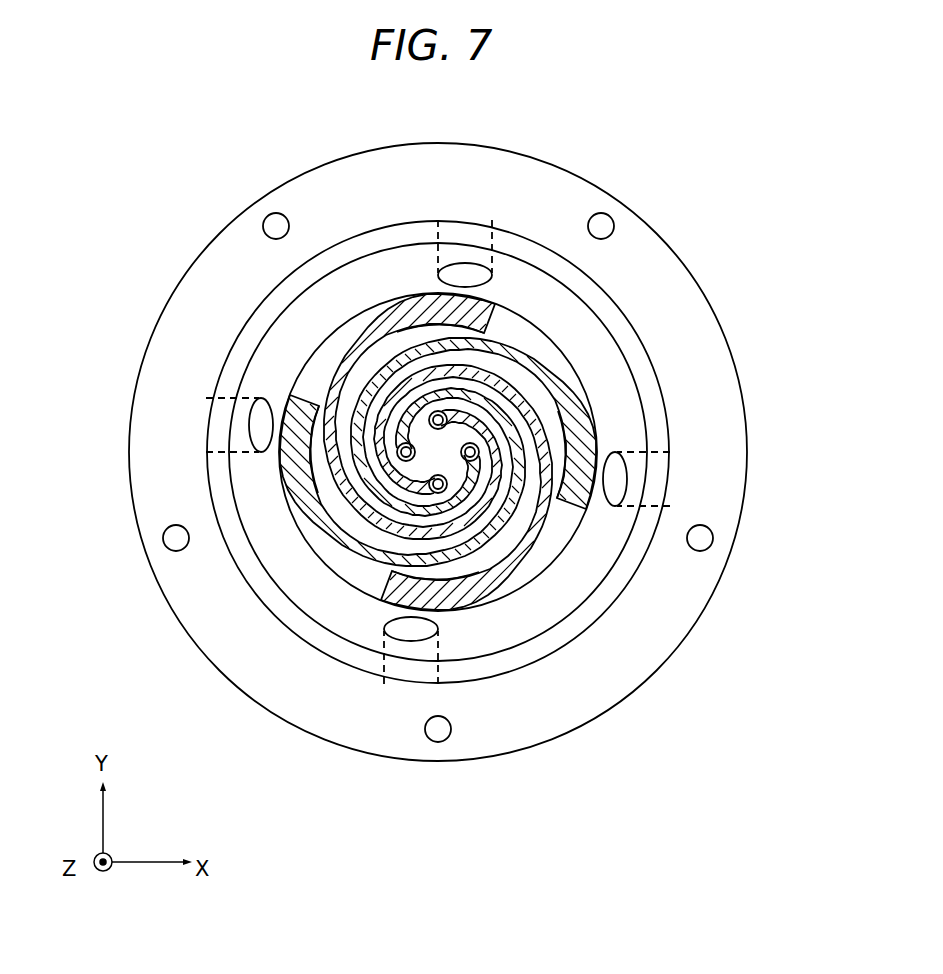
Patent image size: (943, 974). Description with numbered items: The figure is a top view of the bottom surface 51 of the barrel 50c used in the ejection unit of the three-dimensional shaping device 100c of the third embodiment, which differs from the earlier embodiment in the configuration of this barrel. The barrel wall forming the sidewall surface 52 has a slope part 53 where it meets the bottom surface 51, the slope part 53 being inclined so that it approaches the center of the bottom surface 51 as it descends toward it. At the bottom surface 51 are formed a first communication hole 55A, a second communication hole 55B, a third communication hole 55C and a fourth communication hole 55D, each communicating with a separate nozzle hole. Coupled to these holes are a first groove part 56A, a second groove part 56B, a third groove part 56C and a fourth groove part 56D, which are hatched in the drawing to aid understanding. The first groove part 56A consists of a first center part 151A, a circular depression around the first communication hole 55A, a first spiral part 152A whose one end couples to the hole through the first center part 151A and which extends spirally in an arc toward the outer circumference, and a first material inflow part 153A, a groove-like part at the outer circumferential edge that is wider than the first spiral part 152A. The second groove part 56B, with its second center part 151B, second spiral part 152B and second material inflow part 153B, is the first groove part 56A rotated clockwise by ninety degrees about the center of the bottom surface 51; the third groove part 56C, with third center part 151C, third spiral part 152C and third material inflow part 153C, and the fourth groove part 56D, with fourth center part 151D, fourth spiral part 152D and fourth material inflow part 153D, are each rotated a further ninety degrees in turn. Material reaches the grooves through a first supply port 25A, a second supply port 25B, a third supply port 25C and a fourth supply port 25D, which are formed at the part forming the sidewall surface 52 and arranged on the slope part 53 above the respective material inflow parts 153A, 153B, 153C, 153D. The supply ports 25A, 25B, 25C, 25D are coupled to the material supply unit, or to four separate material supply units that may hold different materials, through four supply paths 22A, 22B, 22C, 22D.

The three-dimensional shaping device 100c is at (750, 160).
The barrel 50c is at (652, 168).
The bottom surface 51 is at (273, 363).
The sidewall surface 52 is at (240, 510).
The slope part 53 is at (327, 367).
The first supply path 22A is at (668, 450).
The second supply path 22B is at (493, 235).
The third supply path 22C is at (212, 396).
The fourth supply path 22D is at (440, 684).
The first supply port 25A is at (625, 470).
The second supply port 25B is at (442, 412).
The third supply port 25C is at (256, 396).
The fourth supply port 25D is at (470, 640).
The first communication hole 55A is at (470, 462).
The second communication hole 55B is at (468, 440).
The third communication hole 55C is at (402, 462).
The fourth communication hole 55D is at (447, 490).
The first groove part 56A is at (596, 345).
The second groove part 56B is at (282, 330).
The third groove part 56C is at (278, 548).
The fourth groove part 56D is at (606, 577).
The first center part 151A is at (535, 415).
The second center part 151B is at (355, 305).
The third center part 151C is at (370, 560).
The fourth center part 151D is at (500, 540).
The first spiral part 152A is at (503, 447).
The second spiral part 152B is at (335, 340).
The third spiral part 152C is at (350, 545).
The fourth spiral part 152D is at (475, 520).
The first material inflow part 153A is at (565, 480).
The second material inflow part 153B is at (425, 320).
The third material inflow part 153C is at (330, 500).
The fourth material inflow part 153D is at (515, 480).